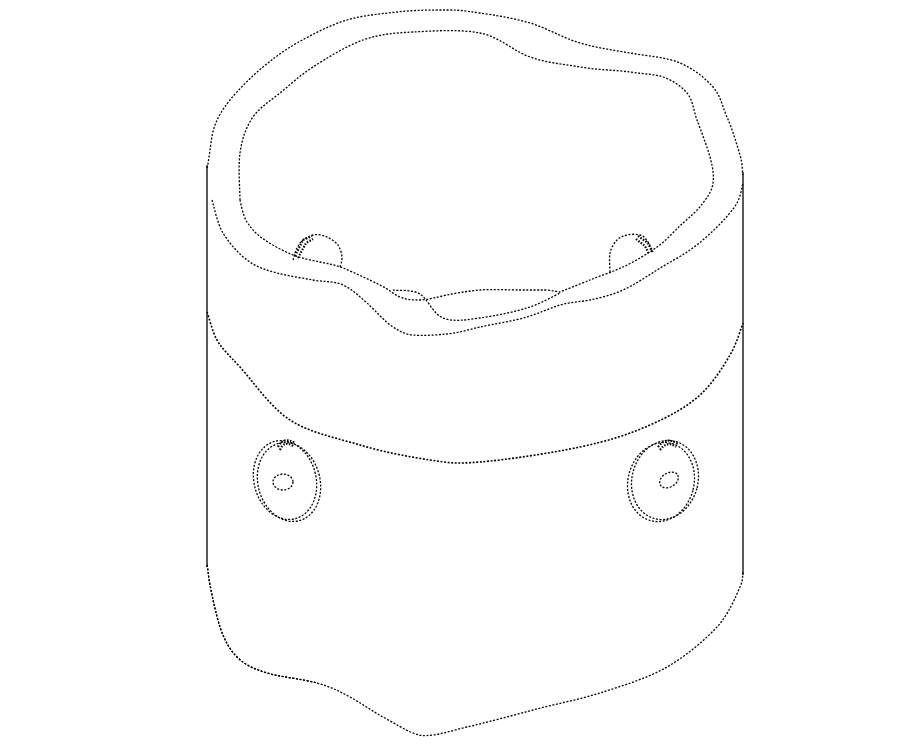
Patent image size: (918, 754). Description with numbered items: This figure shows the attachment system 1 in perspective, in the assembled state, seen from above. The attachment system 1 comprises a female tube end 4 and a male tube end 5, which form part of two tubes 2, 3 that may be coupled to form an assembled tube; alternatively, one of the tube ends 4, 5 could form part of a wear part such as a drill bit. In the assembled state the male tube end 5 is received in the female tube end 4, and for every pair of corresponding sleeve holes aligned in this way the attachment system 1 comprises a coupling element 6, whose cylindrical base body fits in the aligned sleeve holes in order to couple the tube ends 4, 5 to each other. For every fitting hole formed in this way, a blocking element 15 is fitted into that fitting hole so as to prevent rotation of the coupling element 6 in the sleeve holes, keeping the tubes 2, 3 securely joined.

The attachment system 1 is at (127, 99).
The tube 2 is at (238, 602).
The tube 3 is at (688, 90).
The female tube end 4 is at (192, 528).
The male tube end 5 is at (187, 238).
The coupling element 6 is at (298, 248).
The blocking element 15 is at (308, 240).